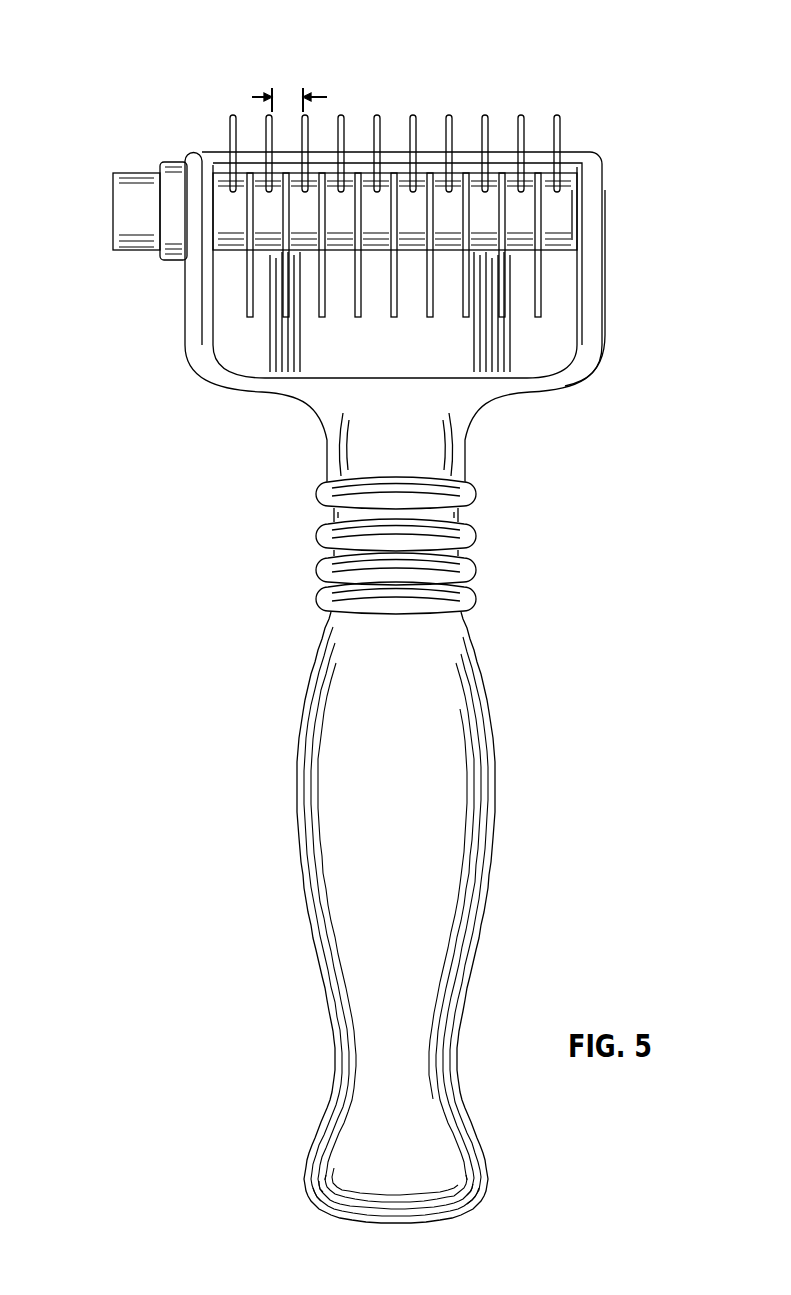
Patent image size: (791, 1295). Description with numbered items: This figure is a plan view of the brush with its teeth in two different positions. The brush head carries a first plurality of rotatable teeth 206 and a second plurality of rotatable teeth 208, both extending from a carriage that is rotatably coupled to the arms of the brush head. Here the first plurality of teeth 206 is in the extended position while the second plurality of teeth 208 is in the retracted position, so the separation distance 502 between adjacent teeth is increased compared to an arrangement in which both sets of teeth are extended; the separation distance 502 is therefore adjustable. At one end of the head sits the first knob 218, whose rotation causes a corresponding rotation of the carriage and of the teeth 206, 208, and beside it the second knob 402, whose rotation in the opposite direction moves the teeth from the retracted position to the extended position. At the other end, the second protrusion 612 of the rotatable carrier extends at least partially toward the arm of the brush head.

The first plurality of rotatable teeth 206 is at (233, 115).
The second plurality of rotatable teeth 208 is at (253, 309).
The first knob 218 is at (170, 163).
The second knob 402 is at (132, 202).
The separation distance 502 is at (316, 94).
The second protrusion 612 is at (577, 218).